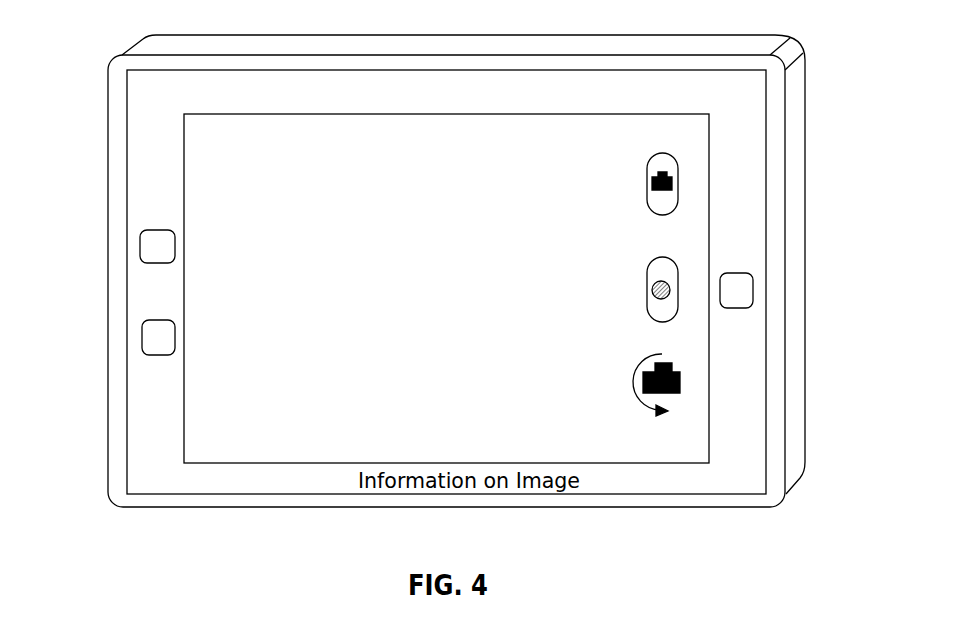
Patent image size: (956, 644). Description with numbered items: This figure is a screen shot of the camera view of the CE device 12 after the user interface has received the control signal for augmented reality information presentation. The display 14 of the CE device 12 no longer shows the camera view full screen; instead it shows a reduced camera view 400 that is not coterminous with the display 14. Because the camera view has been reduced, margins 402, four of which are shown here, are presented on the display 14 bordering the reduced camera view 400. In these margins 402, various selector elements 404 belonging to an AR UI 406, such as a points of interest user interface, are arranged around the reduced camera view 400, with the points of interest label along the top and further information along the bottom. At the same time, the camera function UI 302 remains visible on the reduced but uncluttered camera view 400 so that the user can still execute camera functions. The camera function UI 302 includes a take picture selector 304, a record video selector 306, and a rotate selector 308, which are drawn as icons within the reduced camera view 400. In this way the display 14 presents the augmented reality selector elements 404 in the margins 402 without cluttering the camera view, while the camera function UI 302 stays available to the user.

The CE device 12 is at (805, 137).
The display 14 is at (127, 427).
The camera function UI 302 is at (556, 266).
The take picture selector 304 is at (650, 183).
The record video selector 306 is at (650, 290).
The rotate selector 308 is at (643, 380).
The reduced camera view 400 is at (200, 160).
The margins 402 is at (153, 198).
The selector elements 404 is at (143, 246).
The AR UI 406 is at (546, 98).